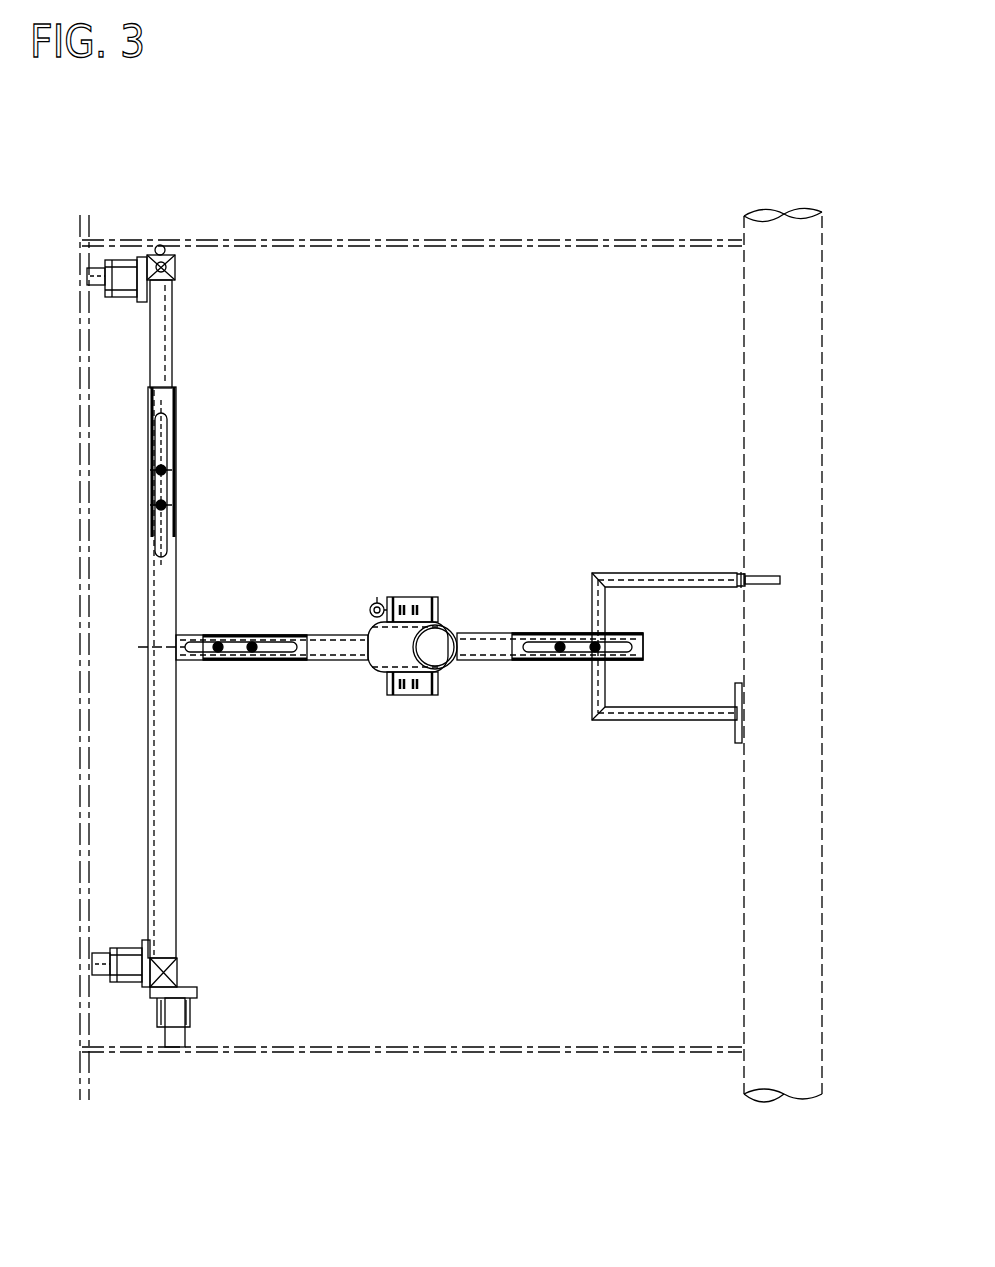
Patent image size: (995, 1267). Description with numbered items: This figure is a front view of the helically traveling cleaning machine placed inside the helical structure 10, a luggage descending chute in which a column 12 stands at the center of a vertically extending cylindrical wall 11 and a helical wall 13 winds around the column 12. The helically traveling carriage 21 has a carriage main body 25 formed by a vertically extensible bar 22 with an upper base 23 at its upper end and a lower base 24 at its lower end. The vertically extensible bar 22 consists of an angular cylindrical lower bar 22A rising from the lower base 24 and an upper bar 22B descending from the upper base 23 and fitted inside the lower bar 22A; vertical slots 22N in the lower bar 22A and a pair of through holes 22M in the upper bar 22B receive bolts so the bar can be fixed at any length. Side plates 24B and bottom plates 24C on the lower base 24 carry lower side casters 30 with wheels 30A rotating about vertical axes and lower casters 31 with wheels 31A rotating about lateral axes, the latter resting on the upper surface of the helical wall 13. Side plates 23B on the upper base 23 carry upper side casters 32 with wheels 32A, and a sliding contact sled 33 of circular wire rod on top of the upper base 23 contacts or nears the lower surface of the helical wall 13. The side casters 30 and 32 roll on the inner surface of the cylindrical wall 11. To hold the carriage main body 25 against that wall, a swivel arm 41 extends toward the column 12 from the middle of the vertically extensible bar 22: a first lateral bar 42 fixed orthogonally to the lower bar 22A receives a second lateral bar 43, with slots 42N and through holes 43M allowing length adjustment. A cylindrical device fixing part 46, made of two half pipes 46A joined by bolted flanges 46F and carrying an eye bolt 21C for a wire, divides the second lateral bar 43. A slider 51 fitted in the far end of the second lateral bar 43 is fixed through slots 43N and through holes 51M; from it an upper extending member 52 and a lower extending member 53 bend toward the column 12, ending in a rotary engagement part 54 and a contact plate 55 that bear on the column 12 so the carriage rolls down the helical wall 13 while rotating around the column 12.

The helical structure 10 is at (451, 635).
The cylindrical wall 11 is at (90, 228).
The column 12 is at (744, 226).
The helical wall 13 is at (632, 240).
The helically traveling carriage 21 is at (395, 633).
The eye bolt 21C is at (376, 603).
The vertically extensible bar 22 is at (158, 619).
The lower bar 22A is at (177, 570).
The upper bar 22B is at (172, 340).
The through holes 22M is at (165, 505).
The slots 22N is at (167, 430).
The upper base 23 is at (176, 268).
The side plates 23B is at (142, 260).
The lower base 24 is at (178, 968).
The side plates 24B is at (150, 950).
The bottom plates 24C is at (197, 992).
The carriage main body 25 is at (157, 619).
The lower side casters 30 is at (120, 946).
The wheels 30A is at (100, 952).
The lower casters 31 is at (219, 1066).
The wheels 31A is at (177, 1055).
The upper side casters 32 is at (114, 302).
The wheels 32A is at (90, 278).
The sliding contact sled 33 is at (166, 250).
The swivel arm 41 is at (253, 685).
The first lateral bar 42 is at (282, 661).
The slots 42N is at (282, 635).
The second lateral bar 43 is at (330, 661).
The through holes 43M is at (252, 635).
The slots 43N is at (560, 661).
The device fixing part 46 is at (432, 633).
The half pipes 46A is at (450, 626).
The flanges 46F is at (432, 597).
The slider 51 is at (550, 708).
The through holes 51M is at (595, 661).
The upper extending member 52 is at (620, 573).
The lower extending member 53 is at (630, 720).
The rotary engagement part 54 is at (745, 578).
The contact plate 55 is at (738, 742).